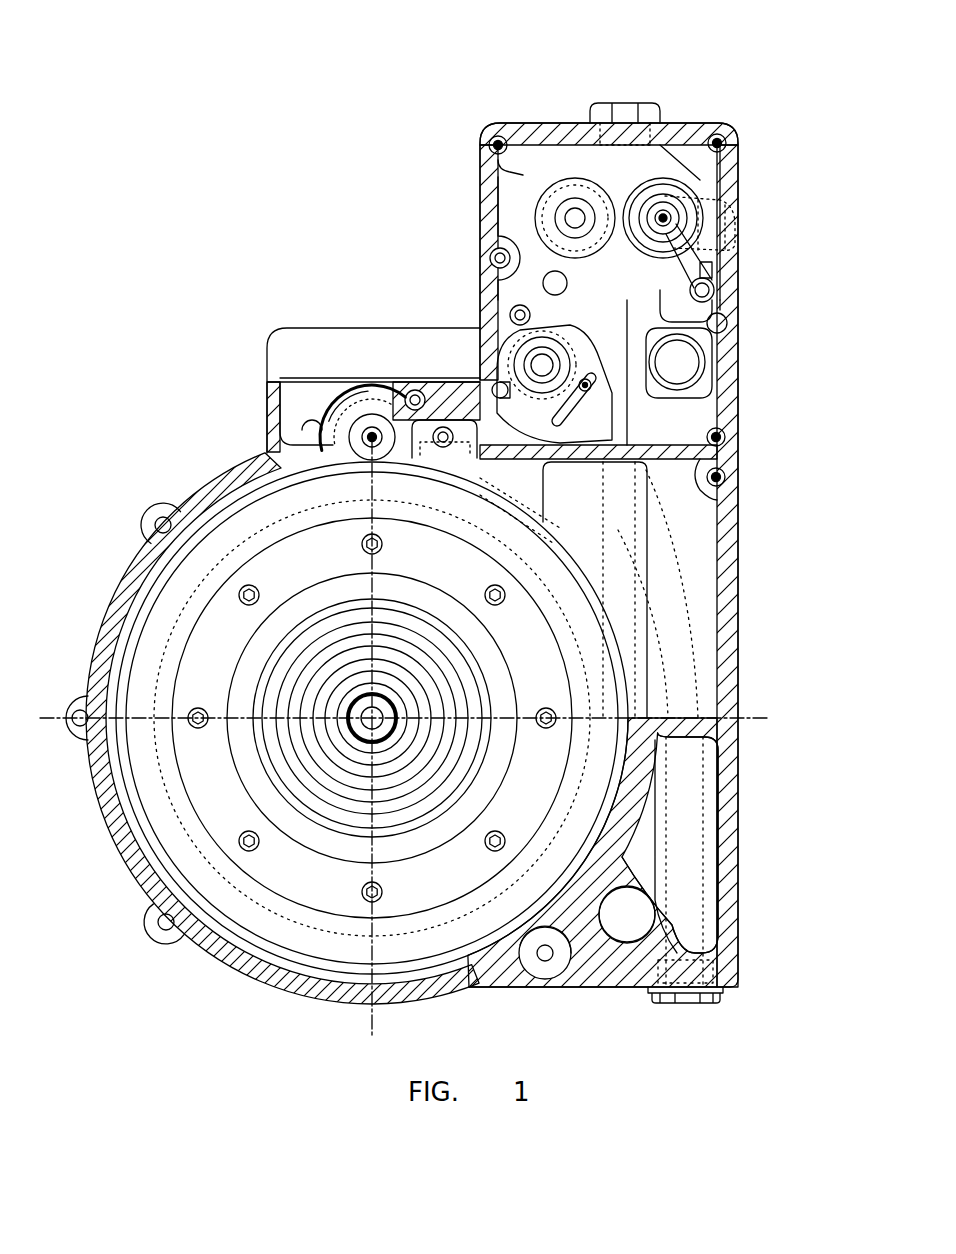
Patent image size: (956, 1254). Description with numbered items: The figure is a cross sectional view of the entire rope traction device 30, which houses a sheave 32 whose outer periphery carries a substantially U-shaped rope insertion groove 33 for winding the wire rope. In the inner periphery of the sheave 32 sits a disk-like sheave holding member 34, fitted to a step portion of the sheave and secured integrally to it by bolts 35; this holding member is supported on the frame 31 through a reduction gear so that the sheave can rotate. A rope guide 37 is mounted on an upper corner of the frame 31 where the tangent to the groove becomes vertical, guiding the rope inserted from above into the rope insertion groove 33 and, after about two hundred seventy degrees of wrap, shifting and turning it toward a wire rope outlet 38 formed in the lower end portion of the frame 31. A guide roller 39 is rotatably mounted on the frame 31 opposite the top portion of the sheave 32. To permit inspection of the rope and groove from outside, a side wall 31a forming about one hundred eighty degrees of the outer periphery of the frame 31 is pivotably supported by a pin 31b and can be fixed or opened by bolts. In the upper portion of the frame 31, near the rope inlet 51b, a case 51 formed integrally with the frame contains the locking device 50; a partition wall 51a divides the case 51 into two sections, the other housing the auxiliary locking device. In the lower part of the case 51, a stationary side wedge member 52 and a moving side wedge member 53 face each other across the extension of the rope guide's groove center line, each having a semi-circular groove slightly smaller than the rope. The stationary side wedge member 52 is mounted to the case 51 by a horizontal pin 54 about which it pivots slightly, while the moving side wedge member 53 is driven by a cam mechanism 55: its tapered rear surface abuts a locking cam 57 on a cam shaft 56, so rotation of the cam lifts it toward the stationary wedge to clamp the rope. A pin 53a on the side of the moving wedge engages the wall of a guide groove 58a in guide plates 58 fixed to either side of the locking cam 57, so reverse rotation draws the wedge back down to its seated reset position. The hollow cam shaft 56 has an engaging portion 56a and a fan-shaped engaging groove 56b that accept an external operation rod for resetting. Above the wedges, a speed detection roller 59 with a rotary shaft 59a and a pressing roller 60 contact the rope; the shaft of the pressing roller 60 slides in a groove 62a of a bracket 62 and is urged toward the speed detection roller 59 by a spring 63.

The rope traction device 30 is at (232, 228).
The frame 31 is at (728, 522).
The side wall 31a is at (100, 640).
The pin 31b is at (545, 966).
The sheave 32 is at (178, 867).
The rope insertion groove 33 is at (137, 520).
The sheave holding member 34 is at (322, 842).
The bolts 35 is at (243, 587).
The rope guide 37 is at (627, 517).
The wire rope outlet 38 is at (690, 1006).
The guide roller 39 is at (370, 435).
The locking device 50 is at (740, 161).
The case 51 is at (528, 124).
The partition wall 51a is at (687, 163).
The rope inlet 51b is at (626, 102).
The stationary side wedge member 52 is at (650, 315).
The moving side wedge member 53 is at (650, 354).
The pin 53a is at (590, 342).
The horizontal pin 54 is at (678, 372).
The cam mechanism 55 is at (503, 330).
The cam shaft 56 is at (510, 368).
The engaging portion 56a is at (498, 384).
The engaging groove 56b is at (518, 345).
The locking cam 57 is at (579, 279).
The guide plates 58 is at (604, 452).
The guide groove 58a is at (582, 402).
The roller 59 is at (543, 180).
The rotary shaft 59a is at (575, 205).
The roller 60 is at (700, 190).
The bracket 62 is at (692, 192).
The groove 62a is at (671, 222).
The spring 63 is at (716, 275).